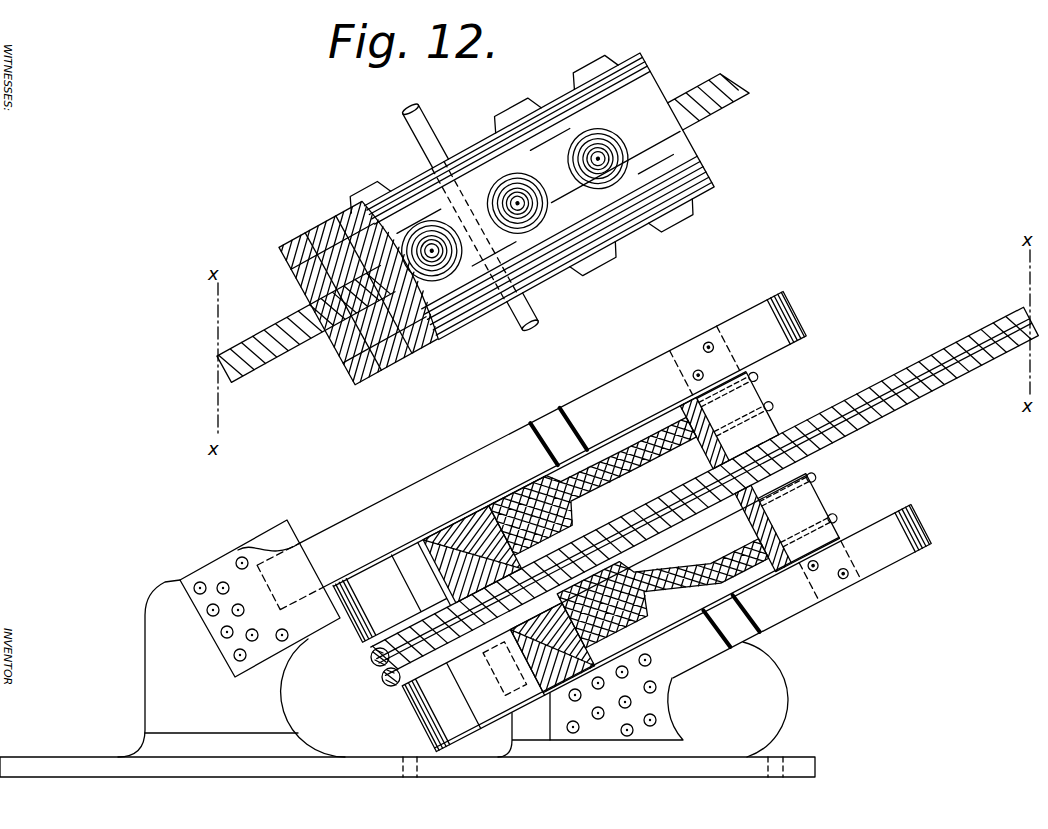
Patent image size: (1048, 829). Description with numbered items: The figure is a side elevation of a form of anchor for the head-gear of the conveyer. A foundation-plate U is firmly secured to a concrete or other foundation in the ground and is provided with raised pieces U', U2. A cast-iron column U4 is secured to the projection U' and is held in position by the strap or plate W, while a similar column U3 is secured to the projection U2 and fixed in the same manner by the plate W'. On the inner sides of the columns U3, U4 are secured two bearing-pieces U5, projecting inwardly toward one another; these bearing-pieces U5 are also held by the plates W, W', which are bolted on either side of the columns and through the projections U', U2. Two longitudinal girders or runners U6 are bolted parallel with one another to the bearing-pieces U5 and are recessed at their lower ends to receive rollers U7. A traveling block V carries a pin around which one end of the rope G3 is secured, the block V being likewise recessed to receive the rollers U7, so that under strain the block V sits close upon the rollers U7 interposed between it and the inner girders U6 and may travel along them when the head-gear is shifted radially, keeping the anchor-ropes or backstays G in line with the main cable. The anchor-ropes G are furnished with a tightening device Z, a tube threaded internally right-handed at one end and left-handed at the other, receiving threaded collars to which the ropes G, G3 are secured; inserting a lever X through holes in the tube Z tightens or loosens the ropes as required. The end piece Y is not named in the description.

The tightening device Z is at (563, 95).
The lever X is at (438, 135).
The end cap Y is at (330, 233).
The anchor-ropes or backstays G is at (692, 92).
The rope G3 is at (283, 348).
The foundation-plate U is at (407, 753).
The raised piece U' is at (231, 650).
The raised piece U2 is at (516, 735).
The column U3 is at (745, 636).
The cast-iron column U4 is at (553, 425).
The bearing-piece U5 is at (766, 383).
The longitudinal girder or runner U6 is at (633, 450).
The roller U7 is at (458, 527).
The strap or plate W is at (531, 441).
The strap or plate W' is at (555, 648).
The traveling block V is at (397, 688).